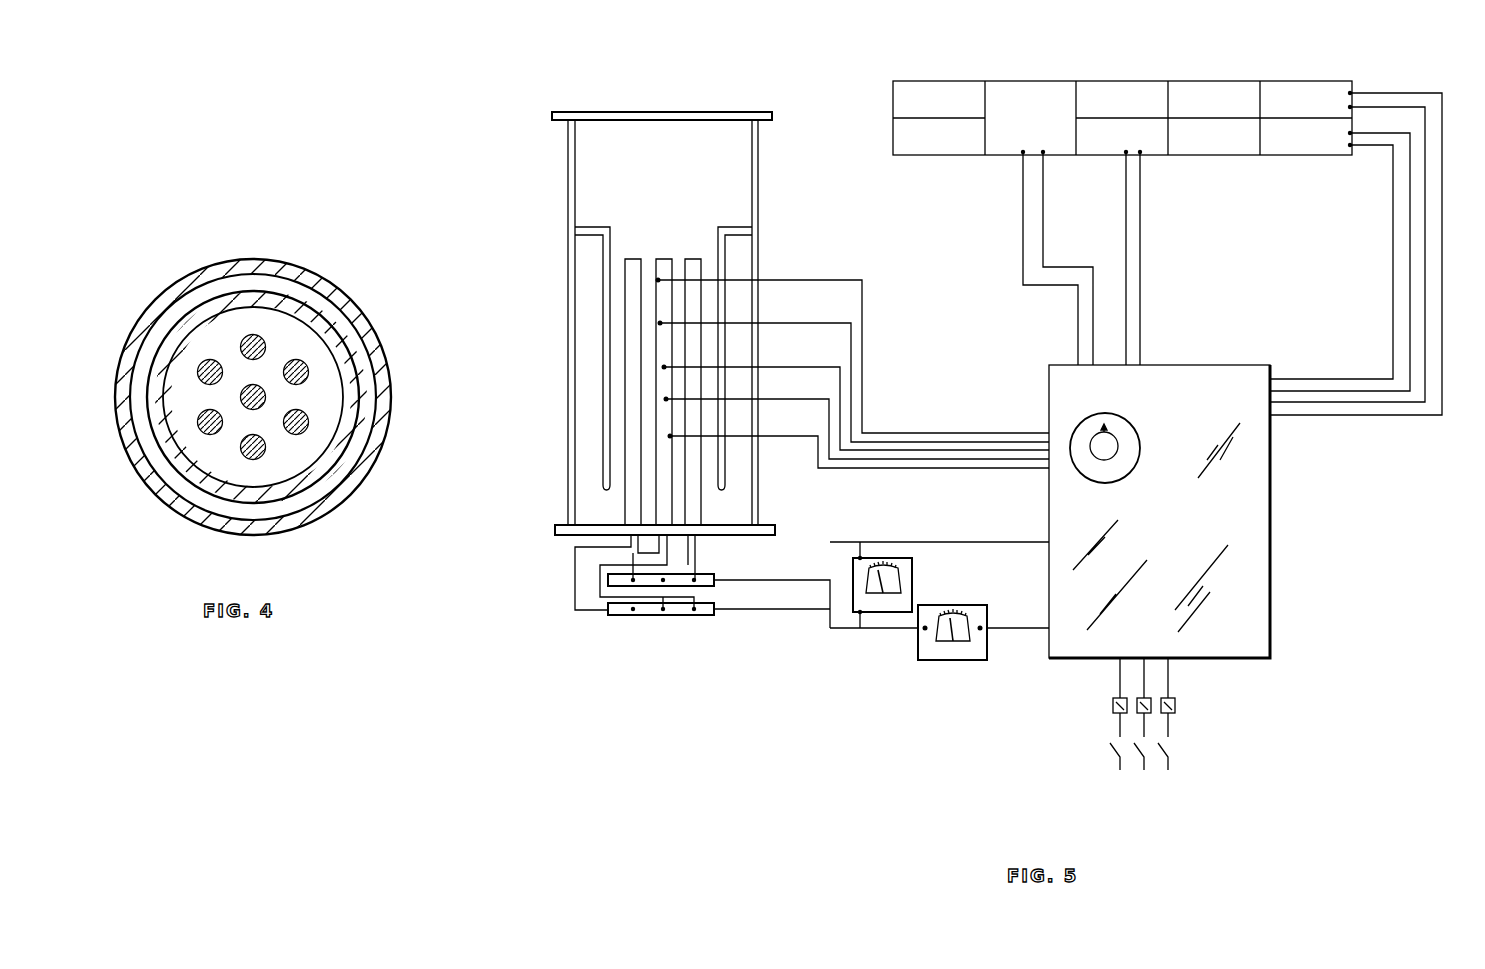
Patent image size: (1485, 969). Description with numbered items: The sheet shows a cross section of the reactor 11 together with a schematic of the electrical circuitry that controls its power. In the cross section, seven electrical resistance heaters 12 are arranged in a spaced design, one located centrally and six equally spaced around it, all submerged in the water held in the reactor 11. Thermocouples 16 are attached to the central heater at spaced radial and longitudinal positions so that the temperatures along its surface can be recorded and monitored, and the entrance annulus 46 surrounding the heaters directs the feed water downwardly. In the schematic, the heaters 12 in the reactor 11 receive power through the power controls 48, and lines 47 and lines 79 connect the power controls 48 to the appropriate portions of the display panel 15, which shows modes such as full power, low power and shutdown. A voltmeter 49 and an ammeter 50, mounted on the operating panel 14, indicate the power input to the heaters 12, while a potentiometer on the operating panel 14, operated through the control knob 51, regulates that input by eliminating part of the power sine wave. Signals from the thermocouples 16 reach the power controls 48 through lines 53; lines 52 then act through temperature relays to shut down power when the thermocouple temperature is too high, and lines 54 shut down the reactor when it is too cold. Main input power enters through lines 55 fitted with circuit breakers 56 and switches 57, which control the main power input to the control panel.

In FIG. 4, the reactor 11 is at (367, 338).
In FIG. 5, the reactor 11 is at (758, 156).
In FIG. 4, the electrical resistance heaters 12 is at (222, 360).
In FIG. 5, the electrical resistance heaters 12 is at (692, 259).
In FIG. 5, the operating panel 14 is at (1270, 572).
In FIG. 5, the display panel 15 is at (1123, 81).
In FIG. 4, the thermocouples 16 is at (244, 390).
In FIG. 5, the thermocouples 16 is at (670, 436).
In FIG. 4, the entrance annulus 46 is at (138, 396).
In FIG. 5, the lines 47 is at (1127, 236).
In FIG. 5, the power controls 48 is at (1262, 511).
In FIG. 5, the voltmeter 49 is at (908, 580).
In FIG. 5, the ammeter 50 is at (977, 605).
In FIG. 5, the control knob 51 is at (1138, 456).
In FIG. 5, the lines 52 is at (1406, 229).
In FIG. 5, the lines 53 is at (930, 433).
In FIG. 5, the lines 54 is at (1424, 244).
In FIG. 5, the lines 55 is at (1168, 676).
In FIG. 5, the circuit breakers 56 is at (1175, 713).
In FIG. 5, the switches 57 is at (1160, 756).
In FIG. 5, the lines 79 is at (1036, 236).